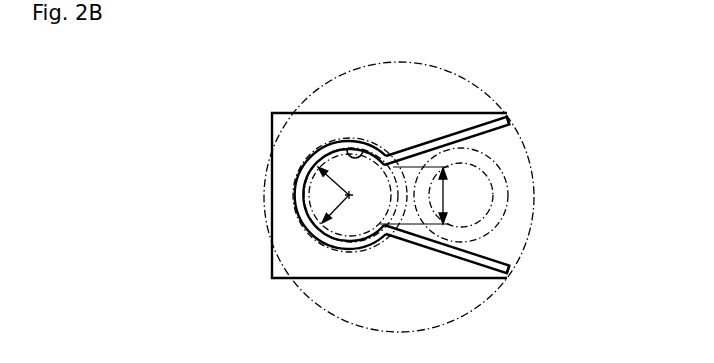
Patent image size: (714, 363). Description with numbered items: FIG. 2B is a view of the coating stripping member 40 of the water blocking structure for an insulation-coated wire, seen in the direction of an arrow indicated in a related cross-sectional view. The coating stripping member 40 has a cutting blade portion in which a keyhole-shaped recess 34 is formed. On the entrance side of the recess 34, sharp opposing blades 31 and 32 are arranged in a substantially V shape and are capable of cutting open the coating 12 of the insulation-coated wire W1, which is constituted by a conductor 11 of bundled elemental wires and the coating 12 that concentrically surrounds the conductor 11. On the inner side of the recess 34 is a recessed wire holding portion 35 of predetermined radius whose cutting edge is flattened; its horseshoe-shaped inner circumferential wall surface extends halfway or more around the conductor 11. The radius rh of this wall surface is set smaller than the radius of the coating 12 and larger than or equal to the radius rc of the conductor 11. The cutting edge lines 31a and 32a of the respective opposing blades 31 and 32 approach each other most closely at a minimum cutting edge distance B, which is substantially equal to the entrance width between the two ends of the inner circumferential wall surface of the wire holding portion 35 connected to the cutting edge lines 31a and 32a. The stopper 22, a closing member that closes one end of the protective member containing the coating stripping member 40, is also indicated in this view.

The coating stripping member 40 is at (265, 129).
The coating 12 is at (410, 157).
The wire holding portion 35 is at (343, 160).
The opposing blade 31 is at (431, 128).
The cutting edge line 31a is at (486, 134).
The opposing blade 32 is at (437, 267).
The cutting edge line 32a is at (487, 255).
The minimum cutting edge distance B is at (424, 195).
The keyhole-shaped recess 34 is at (503, 210).
The insulation-coated wire W1 is at (504, 170).
The stopper 22 is at (499, 293).
The conductor 11 is at (294, 278).
The radius of inner circumferential wall surface rh is at (318, 167).
The radius of conductor rc is at (322, 223).